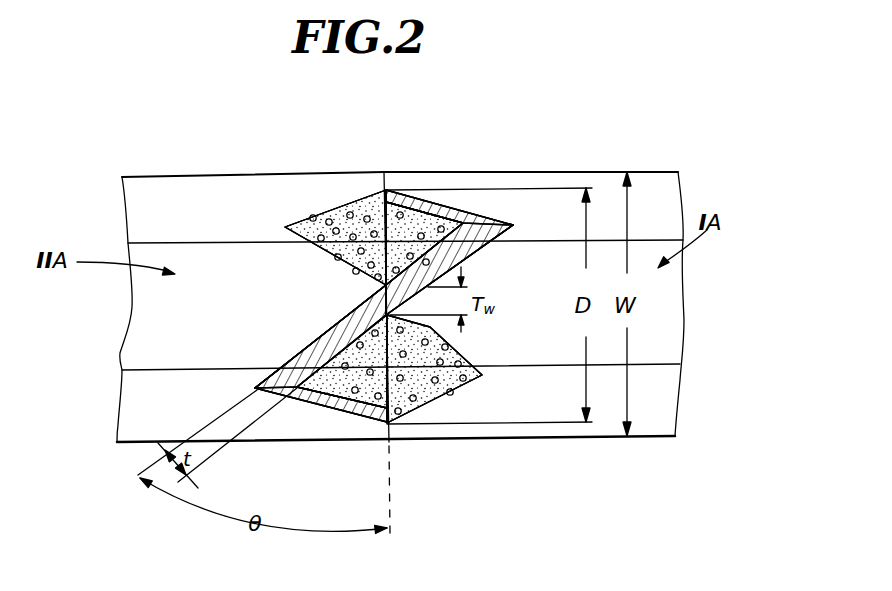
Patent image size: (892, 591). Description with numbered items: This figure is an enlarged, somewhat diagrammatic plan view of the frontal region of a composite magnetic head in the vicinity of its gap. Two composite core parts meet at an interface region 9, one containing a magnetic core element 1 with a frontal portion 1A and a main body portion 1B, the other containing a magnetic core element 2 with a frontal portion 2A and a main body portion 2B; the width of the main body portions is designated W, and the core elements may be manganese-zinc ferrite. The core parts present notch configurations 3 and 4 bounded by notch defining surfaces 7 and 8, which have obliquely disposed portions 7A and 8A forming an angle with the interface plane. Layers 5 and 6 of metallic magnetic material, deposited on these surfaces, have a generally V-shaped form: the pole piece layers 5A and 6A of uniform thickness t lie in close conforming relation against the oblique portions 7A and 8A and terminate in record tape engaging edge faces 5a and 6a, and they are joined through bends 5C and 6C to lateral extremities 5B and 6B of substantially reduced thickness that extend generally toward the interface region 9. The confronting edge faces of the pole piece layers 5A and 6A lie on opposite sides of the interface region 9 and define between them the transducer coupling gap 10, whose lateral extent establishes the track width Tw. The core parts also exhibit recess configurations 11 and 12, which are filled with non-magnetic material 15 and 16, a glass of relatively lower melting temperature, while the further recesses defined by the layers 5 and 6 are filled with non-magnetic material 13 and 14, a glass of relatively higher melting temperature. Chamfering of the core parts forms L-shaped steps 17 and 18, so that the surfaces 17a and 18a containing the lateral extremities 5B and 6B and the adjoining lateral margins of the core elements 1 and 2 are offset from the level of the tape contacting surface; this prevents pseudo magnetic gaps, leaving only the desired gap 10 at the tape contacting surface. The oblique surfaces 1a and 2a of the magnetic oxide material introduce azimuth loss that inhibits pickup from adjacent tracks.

The magnetic core element 1 is at (687, 352).
The frontal portion 1A is at (657, 305).
The main body portion 1B is at (577, 171).
The oblique surface 1a is at (447, 345).
The magnetic core element 2 is at (120, 350).
The frontal portion 2A is at (145, 290).
The main body portion 2B is at (190, 177).
The oblique surface 2a is at (323, 247).
The notch configuration 3 is at (507, 210).
The notch configuration 4 is at (266, 402).
The layer of metallic magnetic material 5 is at (487, 210).
The magnetic pole piece layer 5A is at (460, 263).
The lateral extremity 5B is at (398, 200).
The bend 5C is at (516, 226).
The record tape engaging edge face 5a is at (400, 295).
The layer of metallic magnetic material 6 is at (297, 408).
The magnetic pole piece layer 6A is at (283, 360).
The lateral extremity 6B is at (372, 413).
The bend 6C is at (255, 388).
The record tape engaging edge face 6a is at (335, 310).
The notch defining surface 7 is at (462, 210).
The obliquely disposed portion 7A is at (470, 243).
The notch defining surface 8 is at (285, 375).
The obliquely disposed portion 8A is at (310, 352).
The interface region 9 is at (378, 218).
The transducer coupling gap 10 is at (360, 297).
The recess configuration 11 is at (455, 393).
The recess configuration 12 is at (310, 222).
The non-magnetic material 13 is at (417, 223).
The non-magnetic material 14 is at (360, 380).
The non-magnetic material 15 is at (410, 403).
The non-magnetic material 16 is at (347, 217).
The L-shaped step 17 is at (140, 232).
The offset surface 17a is at (543, 180).
The L-shaped step 18 is at (130, 378).
The offset surface 18a is at (133, 415).